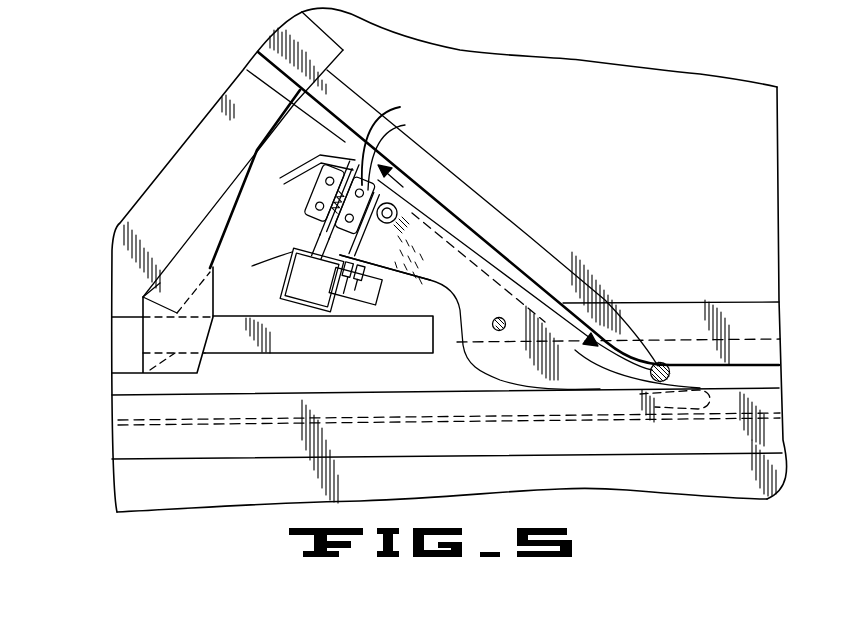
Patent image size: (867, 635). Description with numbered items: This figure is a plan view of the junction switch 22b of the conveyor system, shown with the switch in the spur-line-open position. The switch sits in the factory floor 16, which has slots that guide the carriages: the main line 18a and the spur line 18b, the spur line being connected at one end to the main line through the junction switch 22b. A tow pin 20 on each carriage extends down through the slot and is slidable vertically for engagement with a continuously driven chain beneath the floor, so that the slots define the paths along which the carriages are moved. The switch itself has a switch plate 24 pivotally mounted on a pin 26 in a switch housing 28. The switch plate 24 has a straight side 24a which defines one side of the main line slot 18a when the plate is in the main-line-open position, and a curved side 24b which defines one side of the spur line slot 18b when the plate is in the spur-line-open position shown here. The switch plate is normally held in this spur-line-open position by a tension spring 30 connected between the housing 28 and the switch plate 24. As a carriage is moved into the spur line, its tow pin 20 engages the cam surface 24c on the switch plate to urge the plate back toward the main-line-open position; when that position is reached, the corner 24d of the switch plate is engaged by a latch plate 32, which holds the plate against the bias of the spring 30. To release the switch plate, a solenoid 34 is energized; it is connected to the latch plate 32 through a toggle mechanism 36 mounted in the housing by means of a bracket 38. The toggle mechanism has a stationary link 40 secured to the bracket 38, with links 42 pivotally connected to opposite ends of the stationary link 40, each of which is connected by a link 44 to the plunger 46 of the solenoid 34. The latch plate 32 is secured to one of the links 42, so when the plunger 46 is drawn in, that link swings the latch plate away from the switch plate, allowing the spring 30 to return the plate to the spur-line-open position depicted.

The factory floor 16 is at (607, 108).
The main line 18a is at (128, 393).
The spur line 18b is at (527, 285).
The tow pin 20 is at (671, 372).
The junction switch 22b is at (258, 222).
The switch plate 24 is at (466, 352).
The straight side 24a is at (528, 372).
The curved side 24b is at (562, 325).
The cam surface 24c is at (480, 246).
The corner 24d is at (400, 233).
The pin 26 is at (496, 317).
The switch housing 28 is at (156, 336).
The tension spring 30 is at (398, 272).
The latch plate 32 is at (372, 280).
The solenoid 34 is at (290, 292).
The toggle mechanism 36 is at (395, 140).
The bracket 38 is at (326, 178).
The stationary link 40 is at (353, 164).
The links 42 is at (320, 196).
The link 44 is at (324, 226).
The plunger 46 is at (256, 266).